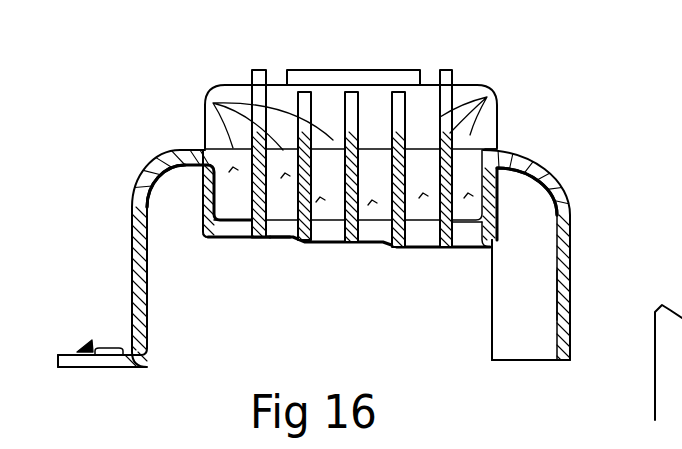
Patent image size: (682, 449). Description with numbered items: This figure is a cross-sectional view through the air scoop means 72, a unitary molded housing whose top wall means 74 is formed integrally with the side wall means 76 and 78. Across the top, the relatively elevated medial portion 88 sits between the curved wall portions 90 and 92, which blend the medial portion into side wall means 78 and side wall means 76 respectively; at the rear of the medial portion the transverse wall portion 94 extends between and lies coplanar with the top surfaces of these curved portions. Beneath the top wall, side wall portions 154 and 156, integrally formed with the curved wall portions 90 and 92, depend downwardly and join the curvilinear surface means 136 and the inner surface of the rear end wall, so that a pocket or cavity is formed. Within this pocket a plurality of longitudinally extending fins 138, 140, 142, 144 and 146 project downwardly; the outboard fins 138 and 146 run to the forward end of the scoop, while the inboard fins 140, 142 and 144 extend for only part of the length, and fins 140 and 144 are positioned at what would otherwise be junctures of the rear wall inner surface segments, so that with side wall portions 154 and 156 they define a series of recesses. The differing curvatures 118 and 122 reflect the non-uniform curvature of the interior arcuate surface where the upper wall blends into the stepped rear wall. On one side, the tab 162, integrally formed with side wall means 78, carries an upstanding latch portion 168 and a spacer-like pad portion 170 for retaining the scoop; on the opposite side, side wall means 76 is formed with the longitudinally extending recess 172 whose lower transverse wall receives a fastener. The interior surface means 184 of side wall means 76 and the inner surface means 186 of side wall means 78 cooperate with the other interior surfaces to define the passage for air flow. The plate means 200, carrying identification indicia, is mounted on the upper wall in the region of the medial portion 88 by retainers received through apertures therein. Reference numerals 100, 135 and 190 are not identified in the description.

The air scoop means 72 is at (142, 112).
The top wall means 74 is at (502, 92).
The side wall means 76 is at (573, 231).
The side wall means 78 is at (129, 243).
The medial portion 88 is at (500, 110).
The curved wall portion 90 is at (200, 147).
The curved wall portion 92 is at (515, 147).
The transverse wall portion 94 is at (213, 103).
The lower end of clip leg 100 is at (558, 363).
The curvature of arcuate surface means 118 is at (223, 237).
The curvature of arcuate surface means 122 is at (468, 196).
The second contact terminal 135 is at (325, 105).
The curvilinear surface means 136 is at (285, 175).
The fin 138 is at (455, 76).
The fin 140 is at (400, 230).
The fin 142 is at (365, 141).
The fin 144 is at (278, 237).
The fin 146 is at (262, 237).
The side wall portion 154 is at (210, 178).
The side wall portion 156 is at (498, 203).
The tab 162 is at (73, 358).
The latch portion 168 is at (88, 342).
The spacer-like pad portion 170 is at (108, 348).
The recess 172 is at (507, 330).
The interior surface means 184 is at (553, 292).
The inner surface means 186 is at (148, 312).
The first contact terminal 190 is at (287, 80).
The plate means 200 is at (315, 70).